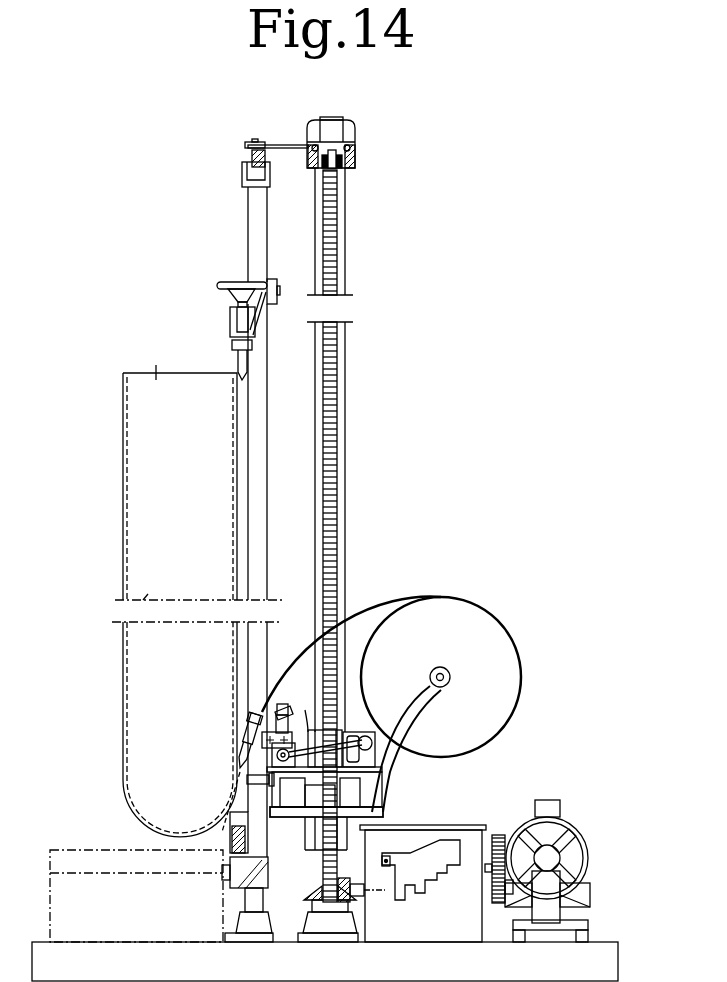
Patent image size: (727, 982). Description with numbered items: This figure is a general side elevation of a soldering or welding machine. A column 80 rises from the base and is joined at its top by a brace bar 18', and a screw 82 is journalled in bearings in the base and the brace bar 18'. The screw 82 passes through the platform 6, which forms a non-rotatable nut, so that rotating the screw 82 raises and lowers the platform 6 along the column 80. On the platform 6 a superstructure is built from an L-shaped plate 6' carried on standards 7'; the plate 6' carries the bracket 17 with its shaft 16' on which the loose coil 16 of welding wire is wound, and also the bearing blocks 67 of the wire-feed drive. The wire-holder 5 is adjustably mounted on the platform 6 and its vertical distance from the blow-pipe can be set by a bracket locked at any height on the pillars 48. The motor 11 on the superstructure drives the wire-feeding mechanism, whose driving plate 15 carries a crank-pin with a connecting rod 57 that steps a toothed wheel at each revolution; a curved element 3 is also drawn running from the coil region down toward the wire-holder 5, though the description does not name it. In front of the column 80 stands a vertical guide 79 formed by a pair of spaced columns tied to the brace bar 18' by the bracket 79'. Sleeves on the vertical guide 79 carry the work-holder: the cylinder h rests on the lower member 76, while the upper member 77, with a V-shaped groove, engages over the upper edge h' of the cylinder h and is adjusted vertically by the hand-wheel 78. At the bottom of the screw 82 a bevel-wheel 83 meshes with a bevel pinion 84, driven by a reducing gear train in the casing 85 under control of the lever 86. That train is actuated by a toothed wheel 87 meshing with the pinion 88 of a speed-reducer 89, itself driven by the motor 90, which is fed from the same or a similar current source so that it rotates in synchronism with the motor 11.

The band 3 is at (311, 648).
The wire-holder 5 is at (244, 760).
The platform 6 is at (326, 828).
The plate 6' is at (338, 754).
The standards 7' is at (341, 787).
The motor 11 is at (310, 711).
The driving plate 15 is at (392, 740).
The loose coil 16 is at (446, 671).
The shaft 16' is at (466, 692).
The bracket 17 is at (450, 674).
The brace bar 18' is at (355, 146).
The pillars 48 is at (284, 714).
The connecting rod 57 is at (347, 738).
The bearing blocks 67 is at (290, 704).
The lower member 76 is at (228, 835).
The upper member 77 is at (238, 366).
The hand-wheel 78 is at (230, 283).
The vertical guide 79 is at (226, 546).
The bracket 79' is at (277, 169).
The column 80 is at (345, 417).
The screw 82 is at (337, 368).
The bevel-wheel 83 is at (312, 897).
The bevel pinion 84 is at (343, 882).
The casing 85 is at (413, 834).
The lever 86 is at (387, 855).
The toothed wheel 87 is at (499, 835).
The pinion 88 is at (499, 896).
The speed-reducer 89 is at (572, 897).
The motor 90 is at (578, 840).
The cylinder h is at (163, 605).
The upper edge h' is at (146, 360).